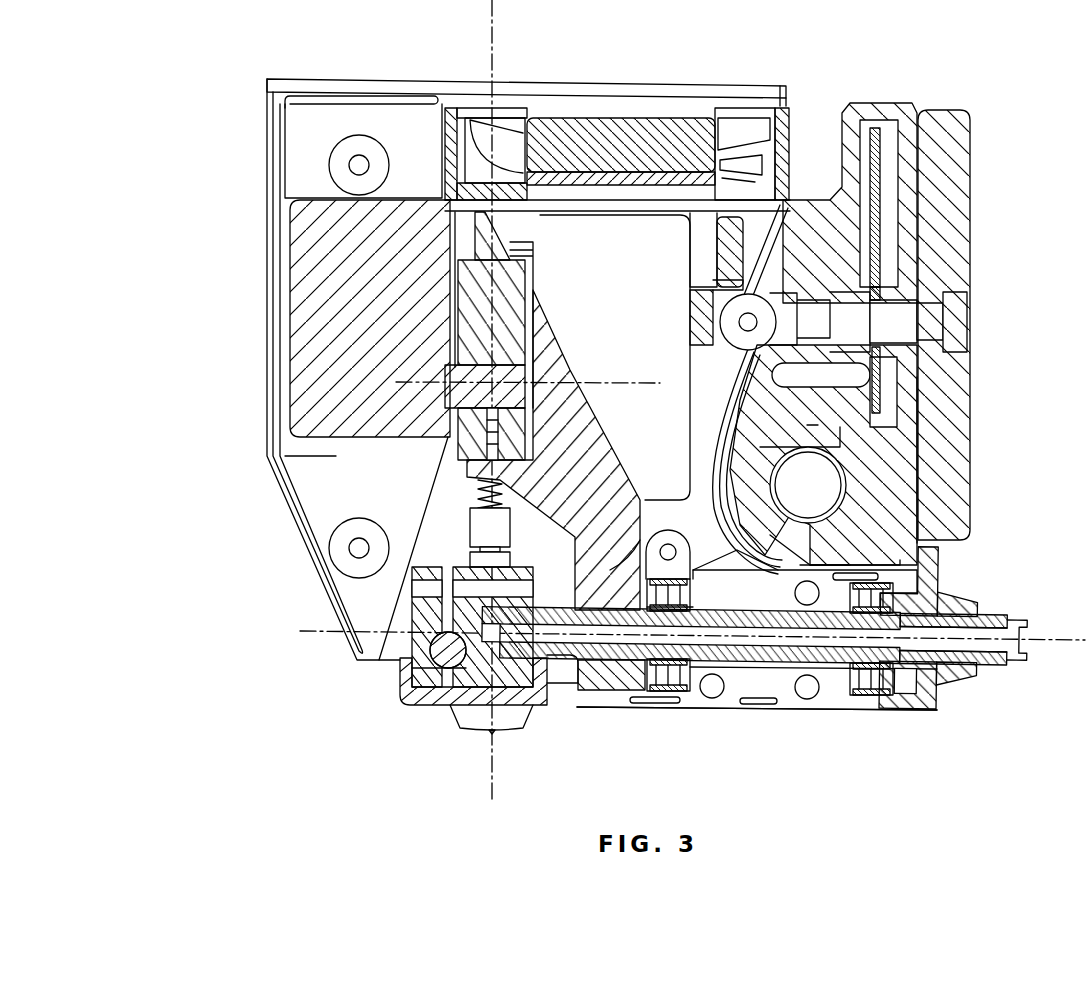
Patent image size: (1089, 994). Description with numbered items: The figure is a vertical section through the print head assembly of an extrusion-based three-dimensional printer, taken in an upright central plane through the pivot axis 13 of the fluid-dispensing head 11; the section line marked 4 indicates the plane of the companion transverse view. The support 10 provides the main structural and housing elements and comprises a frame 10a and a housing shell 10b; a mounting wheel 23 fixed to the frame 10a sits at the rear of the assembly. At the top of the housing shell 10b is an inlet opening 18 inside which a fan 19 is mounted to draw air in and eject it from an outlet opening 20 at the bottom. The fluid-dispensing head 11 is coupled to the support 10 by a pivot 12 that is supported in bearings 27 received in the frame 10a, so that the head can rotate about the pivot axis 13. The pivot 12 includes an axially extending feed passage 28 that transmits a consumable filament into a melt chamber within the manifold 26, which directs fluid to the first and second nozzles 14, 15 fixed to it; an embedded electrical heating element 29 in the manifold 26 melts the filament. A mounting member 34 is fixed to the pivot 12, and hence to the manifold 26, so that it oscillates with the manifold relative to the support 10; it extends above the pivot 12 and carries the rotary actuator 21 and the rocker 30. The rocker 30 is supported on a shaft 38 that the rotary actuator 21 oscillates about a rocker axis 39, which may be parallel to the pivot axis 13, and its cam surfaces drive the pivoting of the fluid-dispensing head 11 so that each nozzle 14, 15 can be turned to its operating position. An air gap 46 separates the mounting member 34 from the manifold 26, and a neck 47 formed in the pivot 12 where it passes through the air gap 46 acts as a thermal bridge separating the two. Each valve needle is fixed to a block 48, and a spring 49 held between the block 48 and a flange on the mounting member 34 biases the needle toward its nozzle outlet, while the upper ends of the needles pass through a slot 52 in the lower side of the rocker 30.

The section line of FIG. 4 is at (540, 18).
The support 10 is at (752, 738).
The frame 10a is at (817, 200).
The housing shell 10b is at (266, 232).
The fluid-dispensing head 11 is at (517, 746).
The pivot 12 is at (551, 677).
The pivot axis 13 is at (1054, 650).
The first nozzle 14 is at (525, 736).
The second nozzle 15 is at (520, 727).
The inlet opening 18 is at (730, 106).
The fan 19 is at (572, 100).
The outlet opening 20 is at (388, 670).
The rotary actuator 21 is at (300, 330).
The mounting wheel 23 is at (963, 186).
The manifold 26 is at (432, 679).
The bearings 27 is at (664, 692).
The feed passage 28 is at (749, 612).
The electrical heating element 29 is at (434, 634).
The rocker 30 is at (515, 287).
The mounting member 34 is at (580, 415).
The shaft 38 is at (521, 378).
The rocker axis 39 is at (630, 378).
The air gap 46 is at (553, 598).
The neck 47 is at (558, 668).
The block 48 is at (485, 540).
The spring 49 is at (488, 496).
The slot 52 is at (490, 447).